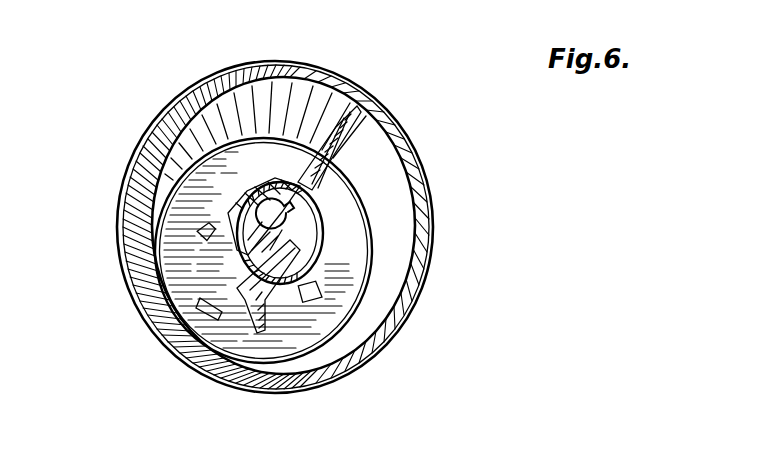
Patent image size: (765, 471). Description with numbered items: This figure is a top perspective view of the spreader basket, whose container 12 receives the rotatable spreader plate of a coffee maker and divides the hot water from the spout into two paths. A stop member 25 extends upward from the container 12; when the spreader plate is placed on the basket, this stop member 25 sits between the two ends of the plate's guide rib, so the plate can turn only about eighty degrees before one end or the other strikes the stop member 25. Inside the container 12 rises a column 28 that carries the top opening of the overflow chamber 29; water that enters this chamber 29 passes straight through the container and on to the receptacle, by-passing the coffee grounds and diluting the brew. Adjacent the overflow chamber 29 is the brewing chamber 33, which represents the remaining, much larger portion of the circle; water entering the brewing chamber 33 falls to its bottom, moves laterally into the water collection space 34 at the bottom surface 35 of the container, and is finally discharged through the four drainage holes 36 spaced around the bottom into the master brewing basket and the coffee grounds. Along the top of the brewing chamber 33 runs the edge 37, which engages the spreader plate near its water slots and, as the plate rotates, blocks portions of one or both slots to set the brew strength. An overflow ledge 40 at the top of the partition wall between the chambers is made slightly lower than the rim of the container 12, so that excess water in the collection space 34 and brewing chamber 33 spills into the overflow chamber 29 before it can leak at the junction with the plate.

The container 12 is at (437, 163).
The stop member 25 is at (362, 128).
The column 28 is at (300, 320).
The overflow chamber 29 is at (268, 178).
The brewing chamber 33 is at (300, 262).
The water collection space 34 is at (243, 262).
The bottom surface 35 is at (257, 343).
The drainage holes 36 is at (214, 316).
The edge 37 is at (318, 250).
The overflow ledge 40 is at (322, 222).